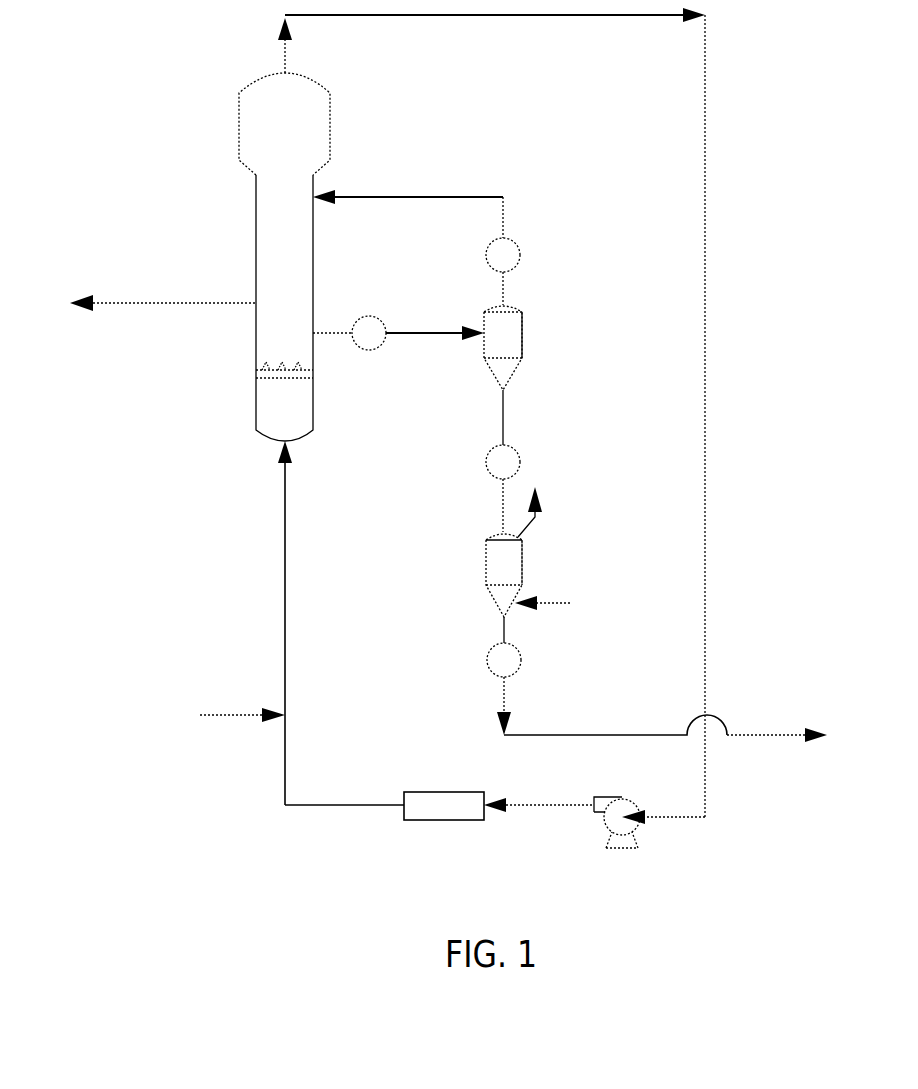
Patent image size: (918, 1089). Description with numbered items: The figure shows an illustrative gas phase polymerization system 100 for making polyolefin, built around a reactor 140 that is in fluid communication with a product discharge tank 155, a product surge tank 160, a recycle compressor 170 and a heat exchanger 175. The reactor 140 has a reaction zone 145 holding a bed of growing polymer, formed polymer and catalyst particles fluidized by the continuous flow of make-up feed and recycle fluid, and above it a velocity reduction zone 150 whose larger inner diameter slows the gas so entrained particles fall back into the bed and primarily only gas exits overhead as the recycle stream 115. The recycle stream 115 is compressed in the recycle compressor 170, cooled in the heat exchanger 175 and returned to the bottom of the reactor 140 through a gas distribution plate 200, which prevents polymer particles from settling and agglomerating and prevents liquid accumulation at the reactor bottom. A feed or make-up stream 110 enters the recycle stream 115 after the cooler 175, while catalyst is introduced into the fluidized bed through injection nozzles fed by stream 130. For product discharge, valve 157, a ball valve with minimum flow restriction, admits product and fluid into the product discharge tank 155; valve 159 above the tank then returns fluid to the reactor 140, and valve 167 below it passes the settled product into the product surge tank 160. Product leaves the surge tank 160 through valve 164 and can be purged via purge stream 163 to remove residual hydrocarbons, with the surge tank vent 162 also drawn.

The polymerization system 100 is at (222, 56).
The feed stream or make-up stream 110 is at (230, 711).
The recycle stream 115 is at (523, 20).
The catalyst stream 130 is at (133, 297).
The reactor 140 is at (270, 212).
The reaction zone 145 is at (313, 231).
The velocity reduction zone 150 is at (330, 117).
The product discharge tank 155 is at (522, 340).
The valve 157 is at (364, 350).
The valve 159 is at (522, 253).
The product surge tank 160 is at (484, 562).
The gas outlet 162 is at (540, 522).
The purge stream 163 is at (548, 605).
The valve 164 is at (488, 656).
The valve 167 is at (487, 452).
The recycle compressor 170 is at (628, 855).
The heat exchanger 175 is at (450, 821).
The gas distribution plate 200 is at (256, 373).